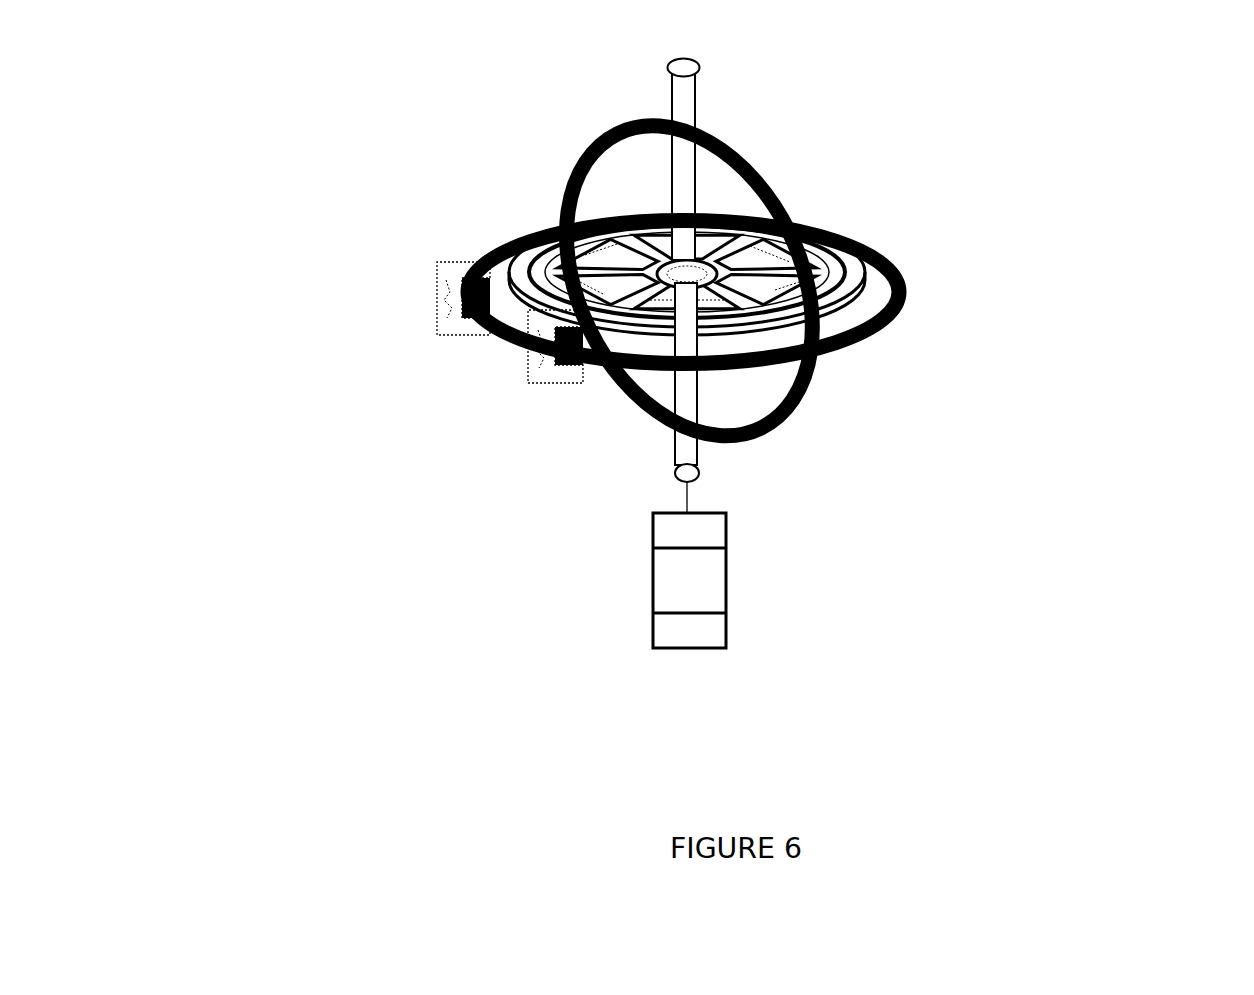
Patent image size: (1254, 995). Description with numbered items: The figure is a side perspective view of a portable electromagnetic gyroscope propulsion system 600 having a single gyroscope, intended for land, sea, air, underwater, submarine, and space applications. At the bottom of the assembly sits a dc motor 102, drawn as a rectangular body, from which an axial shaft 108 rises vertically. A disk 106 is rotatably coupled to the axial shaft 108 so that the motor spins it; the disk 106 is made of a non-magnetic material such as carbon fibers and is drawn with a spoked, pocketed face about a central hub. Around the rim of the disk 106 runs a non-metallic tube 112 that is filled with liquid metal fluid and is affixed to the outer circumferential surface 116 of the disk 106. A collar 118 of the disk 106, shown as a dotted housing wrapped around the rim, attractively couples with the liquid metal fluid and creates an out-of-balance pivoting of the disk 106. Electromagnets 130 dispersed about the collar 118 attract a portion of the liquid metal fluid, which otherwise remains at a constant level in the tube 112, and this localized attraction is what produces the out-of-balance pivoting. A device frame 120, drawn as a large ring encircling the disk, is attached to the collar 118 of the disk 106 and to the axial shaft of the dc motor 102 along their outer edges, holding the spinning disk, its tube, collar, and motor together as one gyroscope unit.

The dc motor 102 is at (727, 580).
The disk 106 is at (540, 237).
The axial shaft 108 is at (707, 517).
The non-metallic tube 112 is at (857, 270).
The outer circumferential surface 116 is at (855, 312).
The collar 118 is at (517, 352).
The device frame 120 is at (750, 163).
The electromagnets 130 is at (427, 364).
The portable electromagnetic gyroscope propulsion system 600 is at (440, 607).